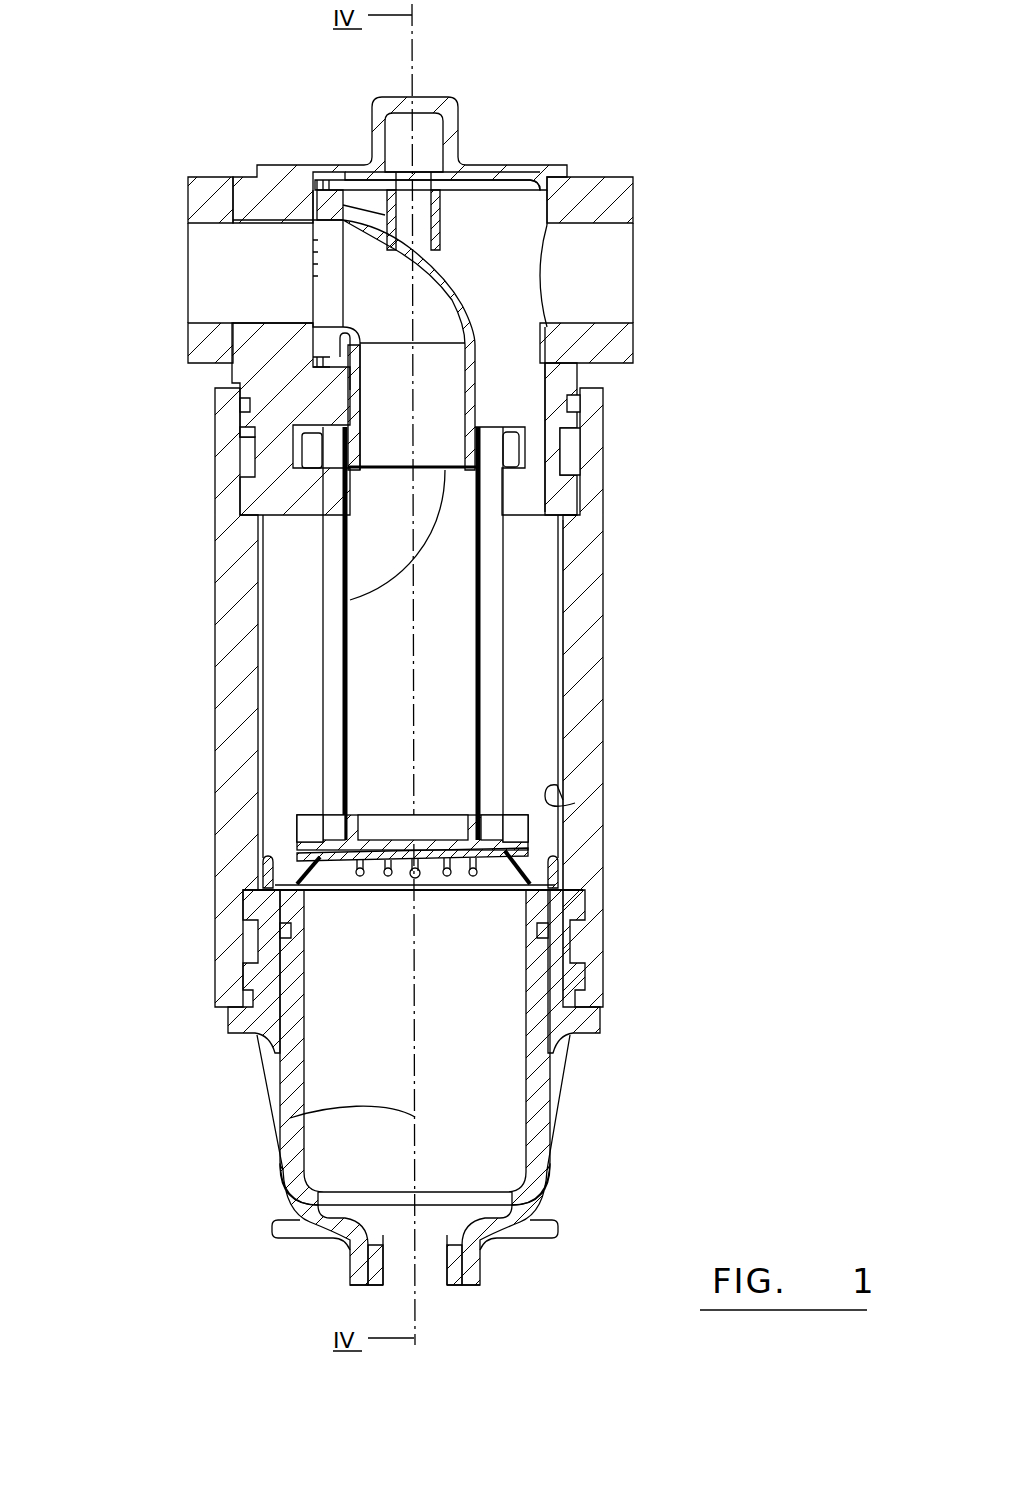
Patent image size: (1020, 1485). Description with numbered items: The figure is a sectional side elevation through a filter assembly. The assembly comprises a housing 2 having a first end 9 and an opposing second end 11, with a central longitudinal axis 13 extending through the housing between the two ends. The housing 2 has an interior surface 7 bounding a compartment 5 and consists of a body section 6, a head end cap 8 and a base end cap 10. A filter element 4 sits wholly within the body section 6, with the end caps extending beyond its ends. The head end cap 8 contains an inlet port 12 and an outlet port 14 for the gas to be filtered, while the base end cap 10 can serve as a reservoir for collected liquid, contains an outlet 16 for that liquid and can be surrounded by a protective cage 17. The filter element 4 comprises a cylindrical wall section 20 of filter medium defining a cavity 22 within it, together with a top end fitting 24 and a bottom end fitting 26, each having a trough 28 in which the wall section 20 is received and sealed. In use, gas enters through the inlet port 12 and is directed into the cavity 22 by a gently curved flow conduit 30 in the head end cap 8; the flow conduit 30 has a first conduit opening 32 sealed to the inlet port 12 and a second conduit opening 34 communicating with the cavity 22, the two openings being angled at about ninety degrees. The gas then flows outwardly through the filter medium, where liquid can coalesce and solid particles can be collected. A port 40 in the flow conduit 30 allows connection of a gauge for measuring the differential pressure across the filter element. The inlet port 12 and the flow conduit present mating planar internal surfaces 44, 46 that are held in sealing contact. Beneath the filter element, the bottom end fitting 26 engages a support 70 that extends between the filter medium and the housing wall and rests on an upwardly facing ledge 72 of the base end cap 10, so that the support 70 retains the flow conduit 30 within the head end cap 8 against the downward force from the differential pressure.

The housing 2 is at (612, 563).
The filter element 4 is at (300, 668).
The compartment 5 is at (525, 692).
The body section 6 is at (583, 745).
The interior surface 7 is at (575, 803).
The head end cap 8 is at (553, 172).
The first end 9 is at (667, 318).
The base end cap 10 is at (547, 1183).
The second end 11 is at (677, 1068).
The inlet port 12 is at (180, 222).
The central longitudinal axis 13 is at (290, 1118).
The outlet port 14 is at (640, 250).
The outlet 16 is at (432, 1278).
The protective cage 17 is at (570, 1085).
The cylindrical wall section 20 is at (490, 607).
The cavity 22 is at (362, 540).
The top end fitting 24 is at (525, 440).
The bottom end fitting 26 is at (525, 847).
The trough 28 is at (510, 455).
The flow conduit 30 is at (345, 395).
The first conduit opening 32 is at (322, 297).
The second conduit opening 34 is at (350, 600).
The port 40 is at (430, 215).
The planar internal surface 44 is at (315, 265).
The planar internal surface 46 is at (200, 247).
The support 70 is at (268, 858).
The ledge 72 is at (560, 880).